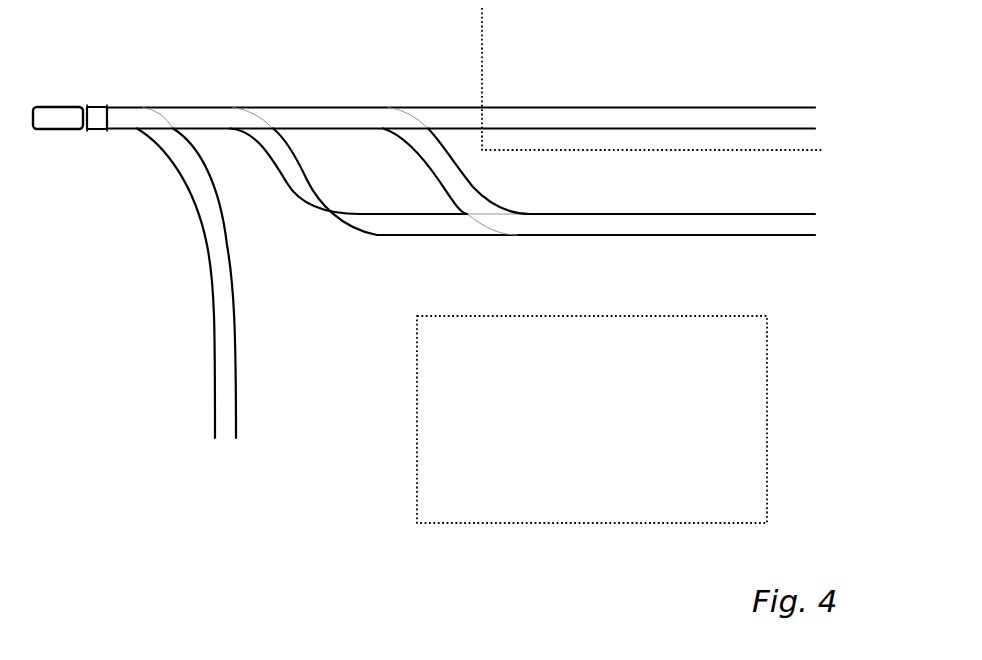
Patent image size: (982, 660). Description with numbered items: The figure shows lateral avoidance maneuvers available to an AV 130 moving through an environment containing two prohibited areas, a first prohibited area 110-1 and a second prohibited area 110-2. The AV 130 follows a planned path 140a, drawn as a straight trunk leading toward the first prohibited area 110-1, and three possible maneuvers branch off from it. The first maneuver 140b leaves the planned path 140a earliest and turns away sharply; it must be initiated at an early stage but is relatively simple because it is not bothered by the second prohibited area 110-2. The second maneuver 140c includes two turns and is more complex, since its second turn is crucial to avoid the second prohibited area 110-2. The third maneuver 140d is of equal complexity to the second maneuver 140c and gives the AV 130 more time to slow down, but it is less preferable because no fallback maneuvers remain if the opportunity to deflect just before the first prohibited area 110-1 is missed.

The AV 130 is at (65, 106).
The planned path 140a is at (725, 107).
The first maneuver 140b is at (237, 363).
The second maneuver 140c is at (378, 236).
The third maneuver 140d is at (473, 188).
The first prohibited area 110-1 is at (597, 53).
The second prohibited area 110-2 is at (607, 432).